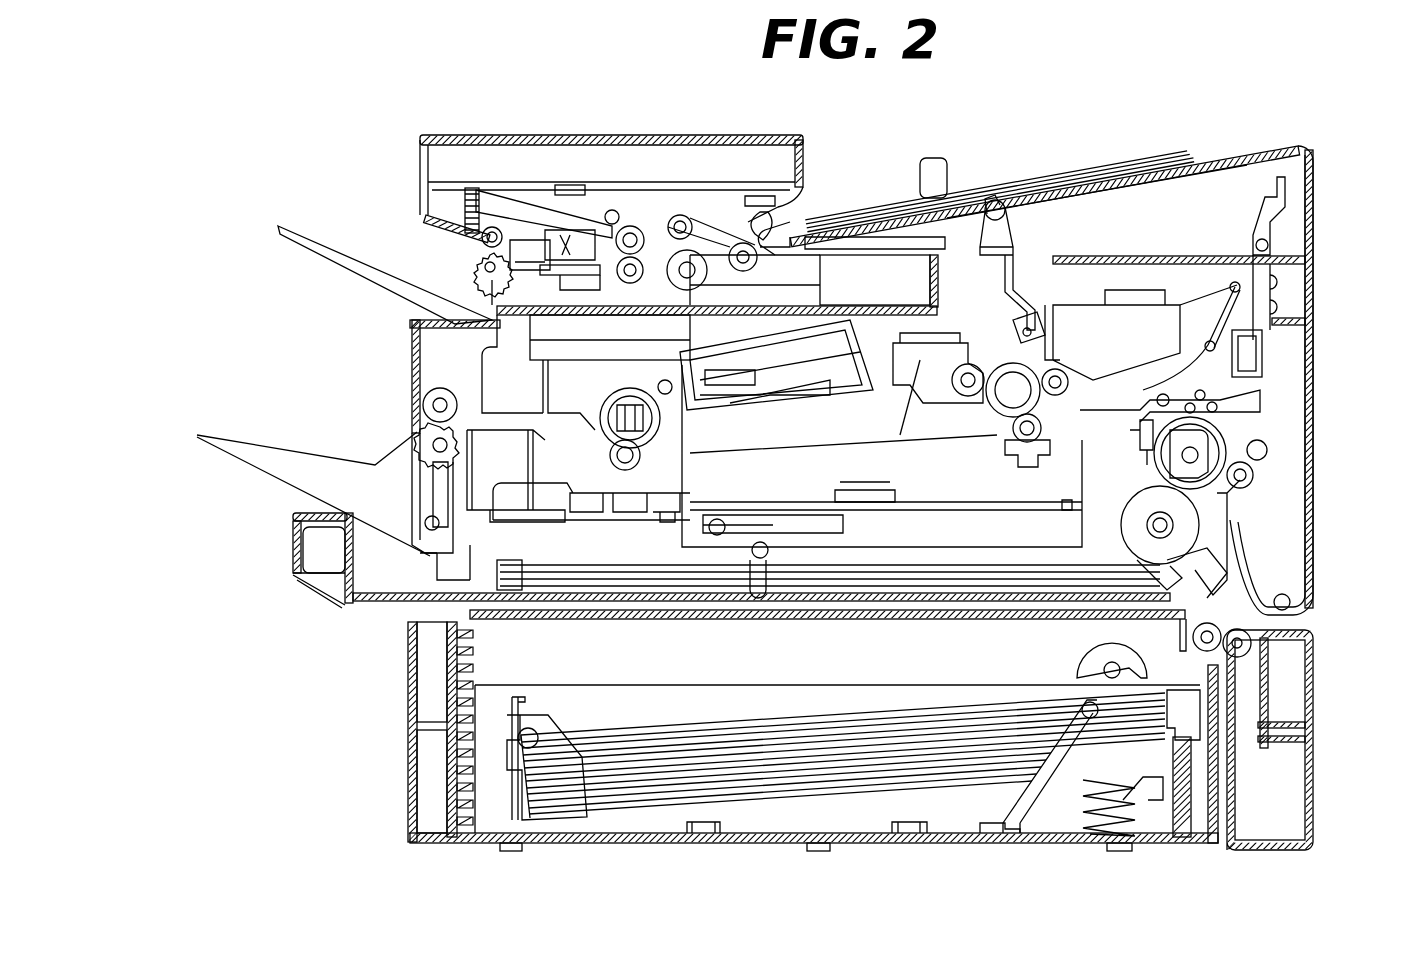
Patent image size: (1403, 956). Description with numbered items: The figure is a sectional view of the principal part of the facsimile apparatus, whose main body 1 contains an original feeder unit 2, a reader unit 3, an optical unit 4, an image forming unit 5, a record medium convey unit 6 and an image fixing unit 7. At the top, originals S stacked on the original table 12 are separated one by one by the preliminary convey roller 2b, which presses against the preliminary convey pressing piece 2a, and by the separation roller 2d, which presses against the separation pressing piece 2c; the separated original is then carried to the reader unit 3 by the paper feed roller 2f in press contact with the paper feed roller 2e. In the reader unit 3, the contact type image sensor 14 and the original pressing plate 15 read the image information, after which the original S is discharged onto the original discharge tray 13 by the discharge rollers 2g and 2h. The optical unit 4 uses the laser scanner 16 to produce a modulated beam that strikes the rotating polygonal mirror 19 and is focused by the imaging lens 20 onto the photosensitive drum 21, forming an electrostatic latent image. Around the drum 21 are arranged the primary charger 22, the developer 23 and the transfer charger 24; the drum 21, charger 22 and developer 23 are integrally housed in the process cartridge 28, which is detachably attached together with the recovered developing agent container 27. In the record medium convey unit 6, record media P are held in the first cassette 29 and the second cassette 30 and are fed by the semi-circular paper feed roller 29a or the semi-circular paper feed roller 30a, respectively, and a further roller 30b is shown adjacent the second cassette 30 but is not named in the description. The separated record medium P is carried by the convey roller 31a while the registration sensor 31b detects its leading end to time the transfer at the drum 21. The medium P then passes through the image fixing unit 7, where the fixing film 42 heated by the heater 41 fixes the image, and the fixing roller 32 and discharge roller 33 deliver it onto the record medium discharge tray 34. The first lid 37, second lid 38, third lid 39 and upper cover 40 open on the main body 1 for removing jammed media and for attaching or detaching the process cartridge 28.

The facsimile apparatus main body 1 is at (1307, 217).
The original feeder unit 2 is at (696, 152).
The preliminary convey pressing piece 2a is at (798, 233).
The preliminary convey roller 2b is at (755, 258).
The separation pressing piece 2c is at (710, 200).
The separation roller 2d is at (702, 275).
The paper feed roller 2e is at (630, 234).
The paper feed roller 2f is at (665, 280).
The discharge roller 2g is at (462, 210).
The discharge roller 2h is at (477, 264).
The reader unit 3 is at (542, 230).
The optical unit 4 is at (820, 388).
The image forming unit 5 is at (1010, 434).
The record medium convey unit 6 is at (1237, 427).
The image fixing unit 7 is at (575, 413).
The original table 12 is at (1060, 182).
The original discharge tray 13 is at (337, 261).
The contact type image sensor 14 is at (563, 238).
The original pressing plate 15 is at (585, 233).
The laser scanner 16 is at (780, 398).
The polygonal mirror 19 is at (720, 375).
The imaging lens 20 is at (915, 350).
The photosensitive drum 21 is at (995, 415).
The primary charger 22 is at (1018, 304).
The developer 23 is at (1077, 353).
The transfer charger 24 is at (1058, 465).
The recovered developing agent container 27 is at (913, 405).
The process cartridge 28 is at (1235, 300).
The first cassette 29 is at (328, 586).
The semi-circular paper feed roller 29a is at (1198, 525).
The second cassette 30 is at (1063, 845).
The semi-circular paper feed roller 30a is at (1077, 665).
The feed rollers 30b is at (1225, 635).
The convey roller 31a is at (1232, 432).
The registration sensor 31b is at (1140, 440).
The fixing roller 32 is at (628, 473).
The discharge roller 33 is at (423, 423).
The record medium discharge tray 34 is at (268, 460).
The first lid 37 is at (410, 350).
The second lid 38 is at (1308, 326).
The third lid 39 is at (1315, 718).
The upper cover 40 is at (1305, 147).
The heater 41 is at (663, 435).
The fixing film 42 is at (617, 403).
The record medium P is at (810, 592).
The original S is at (976, 192).